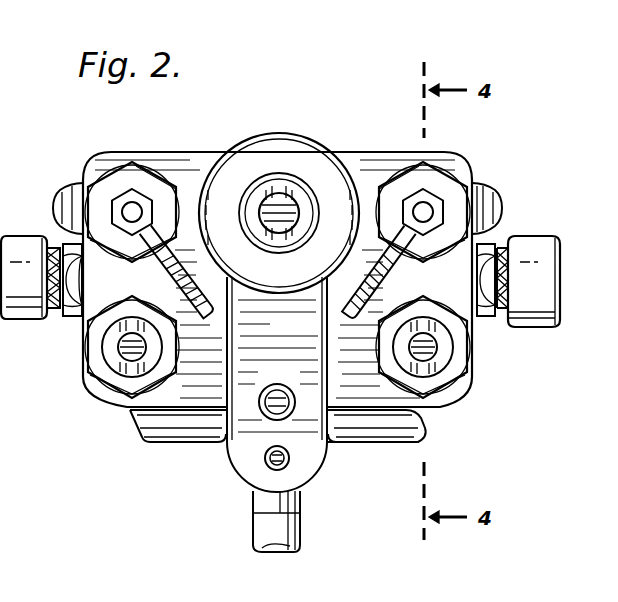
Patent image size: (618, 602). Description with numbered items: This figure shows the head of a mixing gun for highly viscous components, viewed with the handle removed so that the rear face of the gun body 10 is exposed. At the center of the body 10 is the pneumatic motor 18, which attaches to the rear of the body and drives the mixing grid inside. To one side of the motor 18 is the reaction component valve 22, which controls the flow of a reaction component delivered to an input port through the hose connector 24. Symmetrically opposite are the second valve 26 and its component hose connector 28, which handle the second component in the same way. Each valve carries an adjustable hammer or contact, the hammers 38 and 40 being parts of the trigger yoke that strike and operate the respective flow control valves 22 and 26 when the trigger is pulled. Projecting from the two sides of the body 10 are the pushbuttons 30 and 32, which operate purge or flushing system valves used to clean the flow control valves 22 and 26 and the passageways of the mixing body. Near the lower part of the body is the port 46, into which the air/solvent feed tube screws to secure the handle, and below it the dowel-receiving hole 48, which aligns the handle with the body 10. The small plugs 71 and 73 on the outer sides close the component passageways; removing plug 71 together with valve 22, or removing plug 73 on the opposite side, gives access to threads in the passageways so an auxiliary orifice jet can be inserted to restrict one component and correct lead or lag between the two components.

The gun body 10 is at (378, 146).
The pneumatic motor 18 is at (286, 155).
The reaction component valve 22 is at (443, 195).
The hose connector 24 is at (445, 378).
The second valve 26 is at (152, 178).
The component hose connector 28 is at (110, 385).
The pushbutton 30 is at (562, 262).
The pushbutton 32 is at (22, 318).
The adjustable hammer or contact 38 is at (446, 206).
The adjustable hammer or contact 40 is at (120, 192).
The port 46 is at (265, 415).
The dowel-receiving hole 48 is at (290, 462).
The plug 71 is at (505, 200).
The plug 73 is at (52, 190).